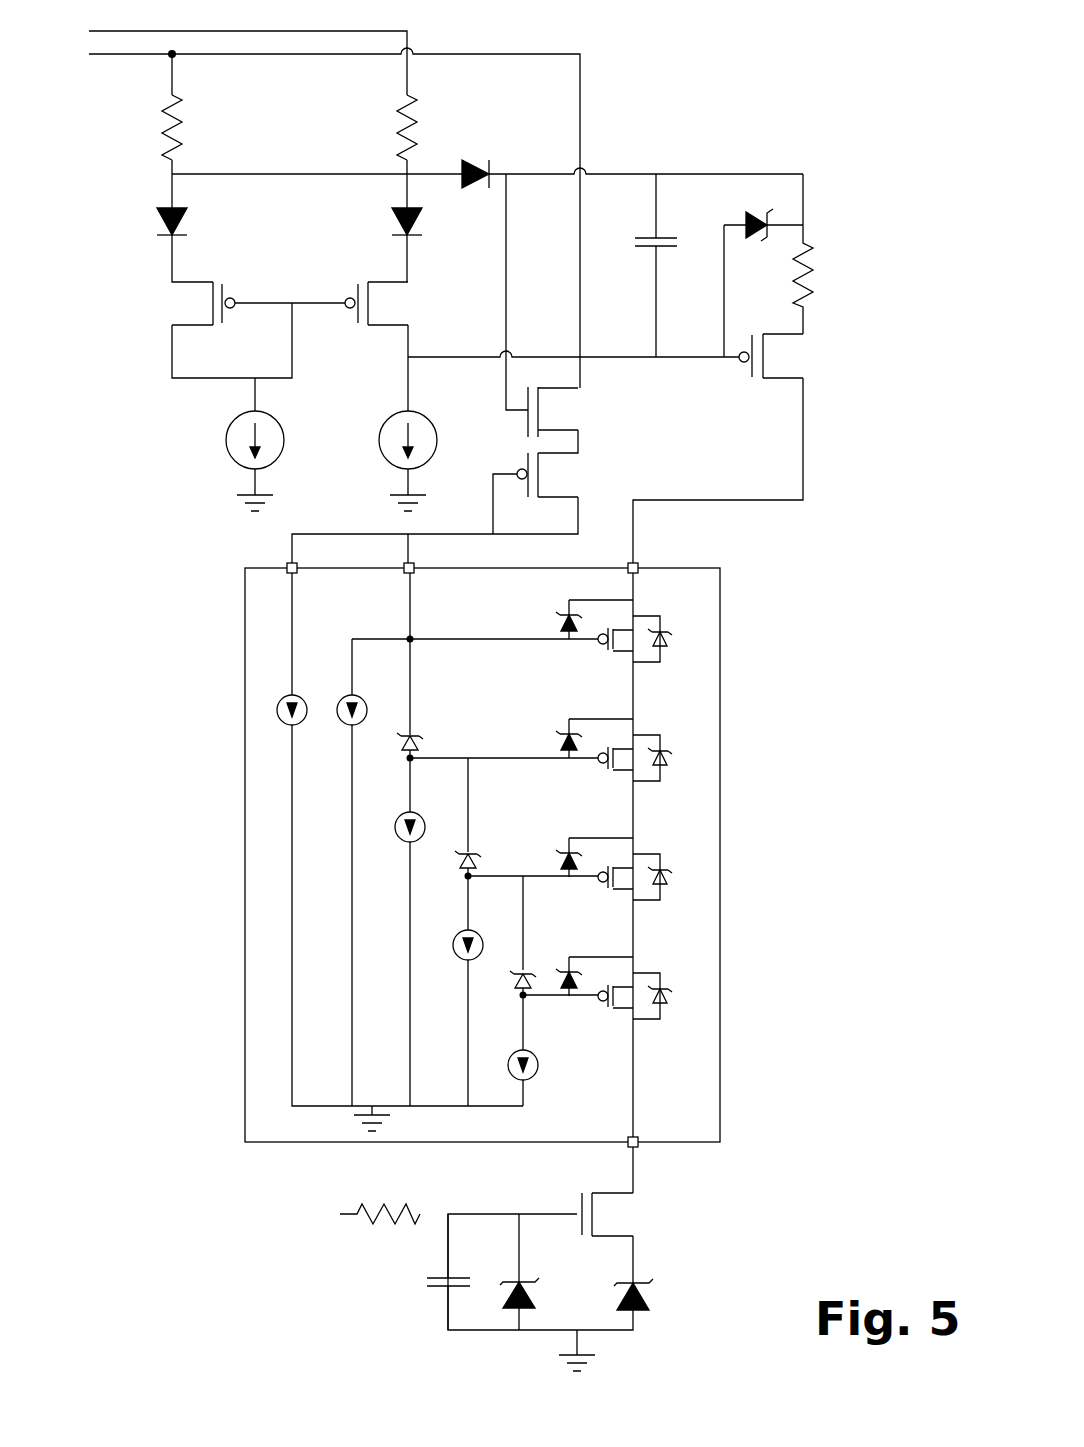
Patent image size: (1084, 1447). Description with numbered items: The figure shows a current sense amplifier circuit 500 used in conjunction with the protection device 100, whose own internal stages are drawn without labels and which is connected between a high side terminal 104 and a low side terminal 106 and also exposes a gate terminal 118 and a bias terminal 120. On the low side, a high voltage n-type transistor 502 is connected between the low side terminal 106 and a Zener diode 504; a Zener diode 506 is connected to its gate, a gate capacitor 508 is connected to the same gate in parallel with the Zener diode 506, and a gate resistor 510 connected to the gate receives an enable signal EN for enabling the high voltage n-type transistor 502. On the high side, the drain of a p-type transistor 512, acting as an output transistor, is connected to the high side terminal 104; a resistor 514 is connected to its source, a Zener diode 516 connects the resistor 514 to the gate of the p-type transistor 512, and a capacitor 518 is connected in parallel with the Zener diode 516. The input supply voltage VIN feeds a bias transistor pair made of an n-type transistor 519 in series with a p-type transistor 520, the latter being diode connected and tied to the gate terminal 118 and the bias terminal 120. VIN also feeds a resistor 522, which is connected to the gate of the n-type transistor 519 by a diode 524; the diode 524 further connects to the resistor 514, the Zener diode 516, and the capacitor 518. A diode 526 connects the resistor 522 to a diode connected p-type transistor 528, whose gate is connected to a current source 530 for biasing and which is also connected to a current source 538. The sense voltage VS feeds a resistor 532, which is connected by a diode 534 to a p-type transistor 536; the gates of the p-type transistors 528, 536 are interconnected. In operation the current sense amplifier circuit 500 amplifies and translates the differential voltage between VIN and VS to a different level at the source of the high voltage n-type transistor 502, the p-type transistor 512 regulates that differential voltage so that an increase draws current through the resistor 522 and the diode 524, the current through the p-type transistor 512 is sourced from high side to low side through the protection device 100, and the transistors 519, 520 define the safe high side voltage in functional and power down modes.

The current sense amplifier circuit 500 is at (854, 58).
The protection device 100 is at (720, 568).
The high side terminal 104 is at (637, 575).
The low side terminal 106 is at (630, 1140).
The gate terminal 118 is at (414, 575).
The bias terminal 120 is at (296, 575).
The high voltage n-type transistor 502 is at (578, 1196).
The Zener diode 504 is at (660, 1300).
The Zener diode 506 is at (527, 1298).
The gate capacitor 508 is at (428, 1283).
The gate resistor 510 is at (372, 1207).
The p-type transistor 512 is at (740, 374).
The resistor 514 is at (818, 258).
The Zener diode 516 is at (745, 214).
The capacitor 518 is at (650, 236).
The n-type transistor 519 is at (522, 422).
The p-type transistor 520 is at (522, 458).
The resistor 522 is at (160, 132).
The diode 524 is at (474, 160).
The diode 526 is at (158, 222).
The p-type transistor 528 is at (222, 290).
The current source 530 is at (224, 446).
The resistor 532 is at (395, 132).
The diode 534 is at (395, 222).
The p-type transistor 536 is at (355, 280).
The current source 538 is at (380, 446).